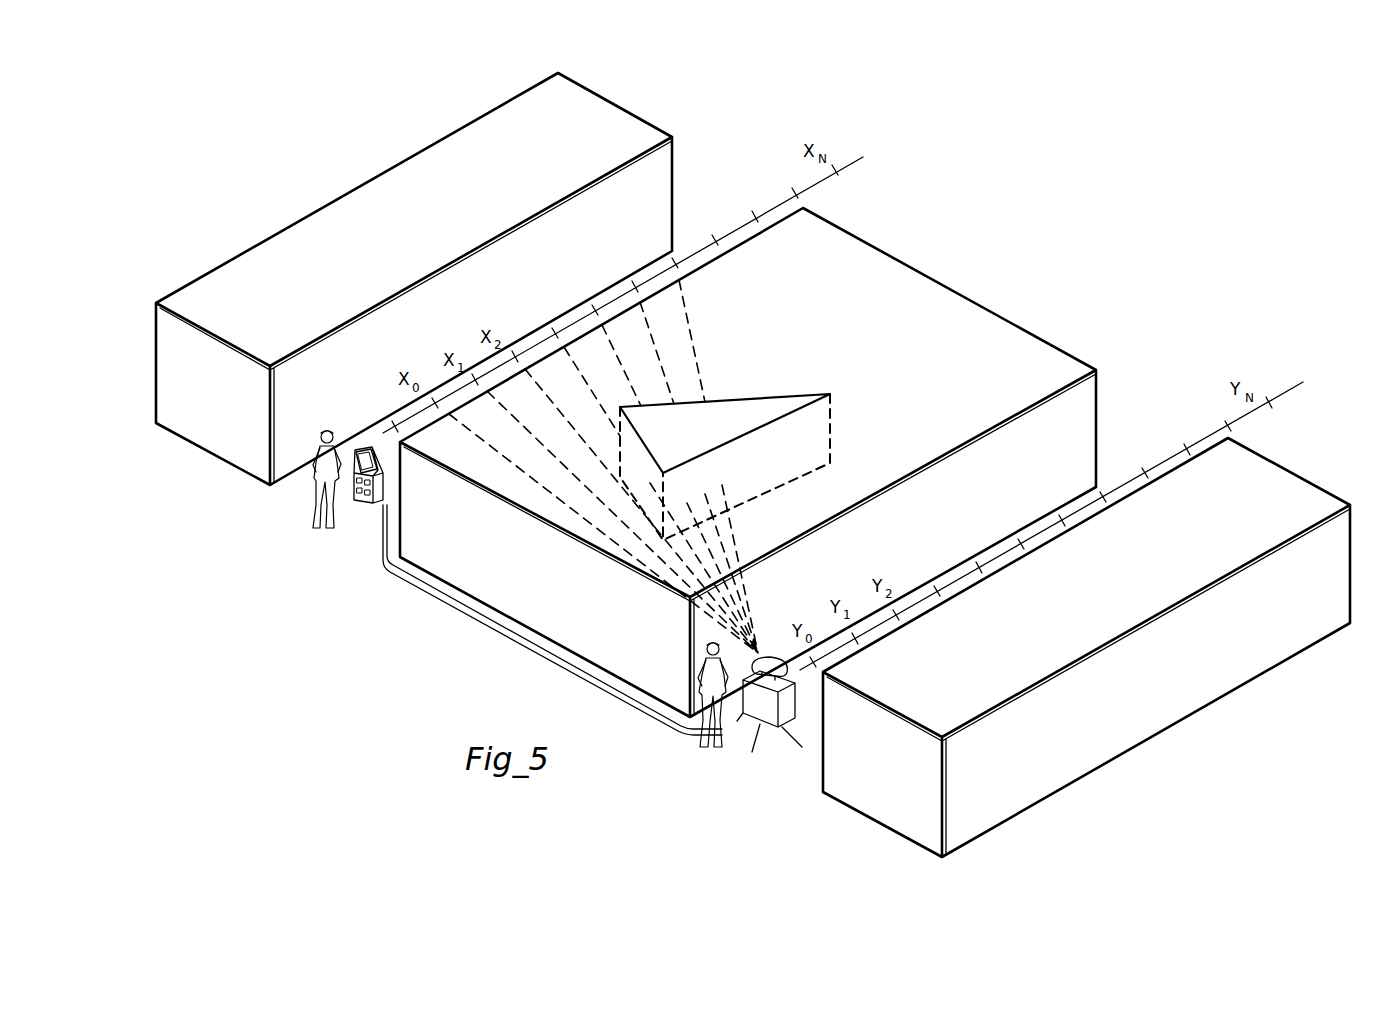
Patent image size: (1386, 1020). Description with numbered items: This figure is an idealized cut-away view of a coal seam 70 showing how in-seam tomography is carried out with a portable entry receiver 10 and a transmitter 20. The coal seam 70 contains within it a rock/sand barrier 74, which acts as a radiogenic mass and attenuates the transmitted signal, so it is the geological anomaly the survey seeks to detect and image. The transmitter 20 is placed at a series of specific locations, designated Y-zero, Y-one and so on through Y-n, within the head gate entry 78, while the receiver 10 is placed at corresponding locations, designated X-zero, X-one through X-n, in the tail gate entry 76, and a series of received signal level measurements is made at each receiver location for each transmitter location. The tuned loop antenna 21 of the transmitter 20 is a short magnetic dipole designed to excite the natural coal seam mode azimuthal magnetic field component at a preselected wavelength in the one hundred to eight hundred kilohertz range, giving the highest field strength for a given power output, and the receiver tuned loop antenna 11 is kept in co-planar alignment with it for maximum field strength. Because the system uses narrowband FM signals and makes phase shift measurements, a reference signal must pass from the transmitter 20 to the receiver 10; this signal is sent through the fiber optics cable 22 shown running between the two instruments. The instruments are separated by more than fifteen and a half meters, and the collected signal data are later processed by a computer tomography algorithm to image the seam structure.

The receiver 10 is at (366, 508).
The receiver tuned loop antenna 11 is at (366, 454).
The transmitter 20 is at (775, 734).
The tuned loop antenna 21 is at (773, 667).
The fiber optics cable 22 is at (513, 637).
The coal seam 70 is at (408, 232).
The rock/sand barrier 74 is at (723, 428).
The tail gate entry 76 is at (677, 260).
The head gate entry 78 is at (1101, 491).